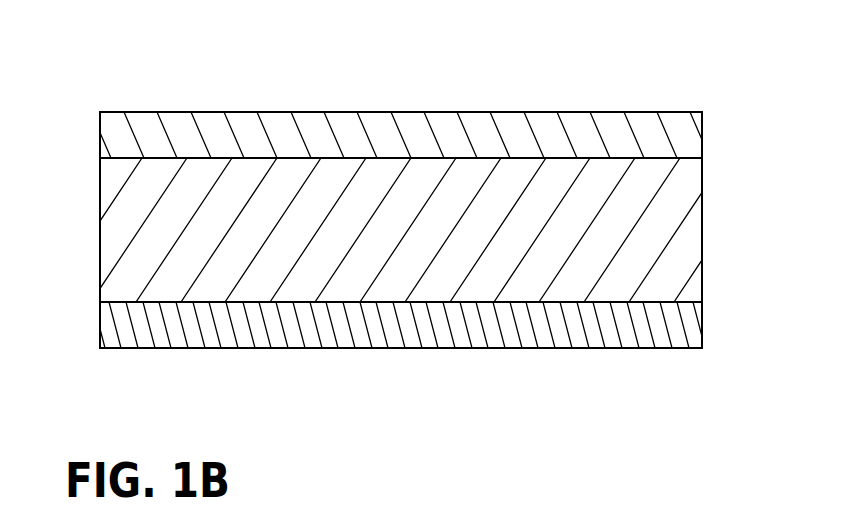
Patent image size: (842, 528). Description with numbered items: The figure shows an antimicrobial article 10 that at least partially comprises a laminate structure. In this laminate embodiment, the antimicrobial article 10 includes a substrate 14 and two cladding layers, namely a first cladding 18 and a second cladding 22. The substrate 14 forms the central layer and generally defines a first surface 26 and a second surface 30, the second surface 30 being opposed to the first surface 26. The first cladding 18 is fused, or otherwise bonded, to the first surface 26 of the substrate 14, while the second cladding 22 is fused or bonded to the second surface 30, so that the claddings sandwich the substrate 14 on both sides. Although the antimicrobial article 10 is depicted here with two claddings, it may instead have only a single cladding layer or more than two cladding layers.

The antimicrobial article 10 is at (683, 88).
The first cladding 18 is at (680, 142).
The substrate 14 is at (680, 245).
The second cladding 22 is at (680, 328).
The first surface 26 is at (152, 162).
The second surface 30 is at (153, 298).